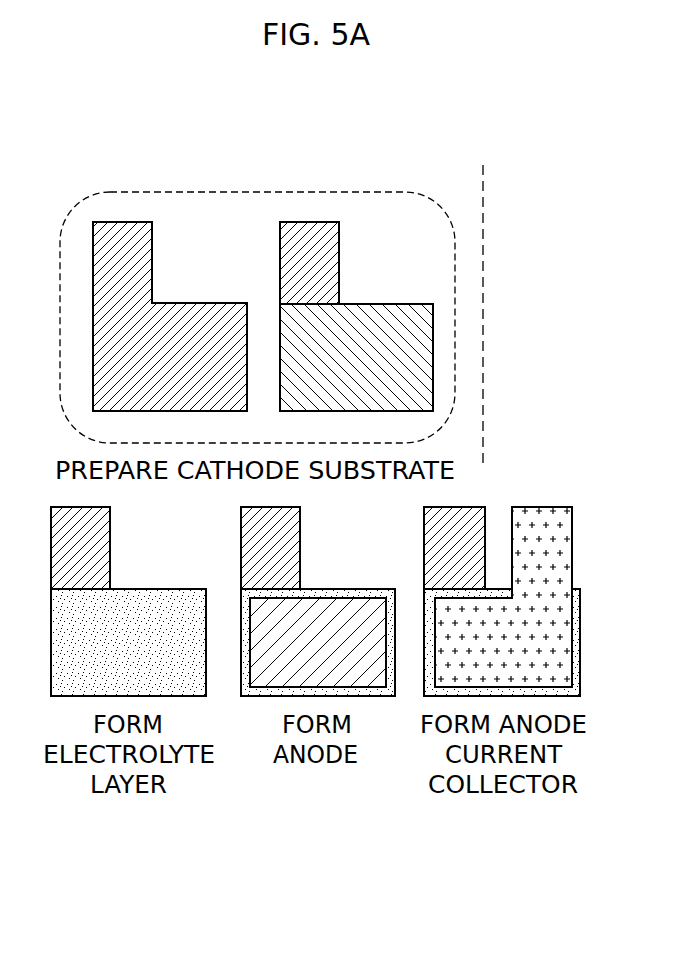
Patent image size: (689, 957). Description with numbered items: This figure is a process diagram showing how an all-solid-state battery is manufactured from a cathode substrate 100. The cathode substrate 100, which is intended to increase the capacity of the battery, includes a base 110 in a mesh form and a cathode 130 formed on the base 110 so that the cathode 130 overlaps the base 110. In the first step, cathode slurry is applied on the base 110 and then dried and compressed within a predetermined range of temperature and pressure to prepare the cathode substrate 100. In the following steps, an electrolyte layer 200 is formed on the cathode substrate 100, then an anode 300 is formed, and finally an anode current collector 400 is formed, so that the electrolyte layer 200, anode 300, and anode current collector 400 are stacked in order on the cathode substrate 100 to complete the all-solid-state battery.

The cathode substrate 100 is at (263, 254).
The base 110 is at (138, 224).
The cathode 130 is at (356, 275).
The electrolyte layer 200 is at (172, 597).
The anode 300 is at (355, 606).
The anode current collector 400 is at (541, 512).